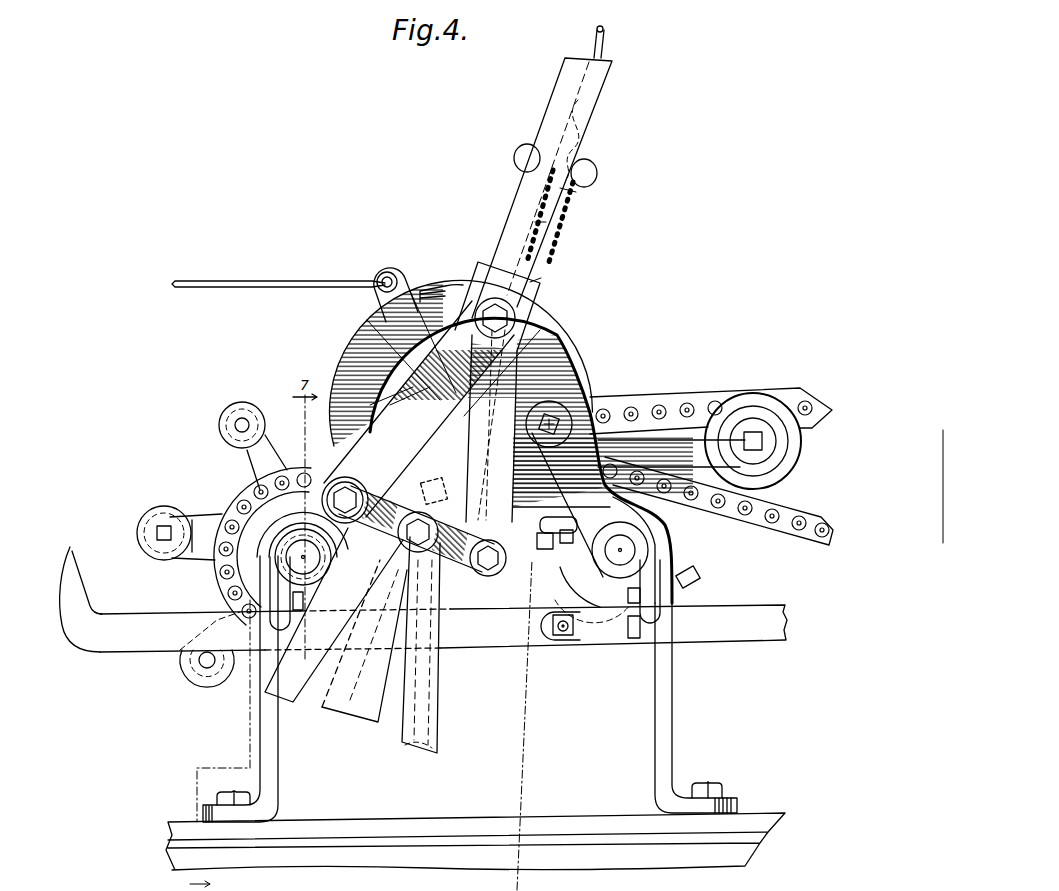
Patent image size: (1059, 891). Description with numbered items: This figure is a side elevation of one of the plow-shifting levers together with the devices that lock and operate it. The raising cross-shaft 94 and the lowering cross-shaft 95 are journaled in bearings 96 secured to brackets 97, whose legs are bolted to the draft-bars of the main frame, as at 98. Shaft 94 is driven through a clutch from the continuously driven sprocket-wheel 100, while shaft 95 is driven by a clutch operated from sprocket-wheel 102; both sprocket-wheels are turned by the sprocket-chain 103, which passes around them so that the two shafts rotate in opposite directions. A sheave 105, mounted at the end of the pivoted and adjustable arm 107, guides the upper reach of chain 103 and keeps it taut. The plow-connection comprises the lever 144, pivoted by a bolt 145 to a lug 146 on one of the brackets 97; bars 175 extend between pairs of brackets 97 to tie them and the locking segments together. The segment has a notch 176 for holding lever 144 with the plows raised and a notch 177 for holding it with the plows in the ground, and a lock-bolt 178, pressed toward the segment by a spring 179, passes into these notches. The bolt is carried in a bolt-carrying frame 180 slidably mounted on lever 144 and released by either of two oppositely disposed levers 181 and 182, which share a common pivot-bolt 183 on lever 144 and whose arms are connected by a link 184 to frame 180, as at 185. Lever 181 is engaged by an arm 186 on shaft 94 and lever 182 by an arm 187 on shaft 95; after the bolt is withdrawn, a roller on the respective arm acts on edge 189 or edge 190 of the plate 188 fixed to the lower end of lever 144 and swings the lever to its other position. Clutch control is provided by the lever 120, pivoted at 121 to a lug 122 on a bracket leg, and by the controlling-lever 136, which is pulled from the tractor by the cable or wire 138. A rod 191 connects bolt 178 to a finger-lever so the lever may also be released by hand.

The rod 191 is at (596, 40).
The lever 144 is at (600, 93).
The controlling-lever 136 is at (390, 276).
The notch 176 is at (421, 288).
The lock-bolt 178 is at (575, 192).
The spring 179 is at (545, 222).
The notch 177 is at (540, 278).
The bolt-carrying frame 180 is at (545, 310).
The connection 185 is at (548, 330).
The bars 175 is at (572, 366).
The bolt 145 is at (585, 381).
The link 184 is at (413, 387).
The lug 146 is at (430, 387).
The pivot-bolt 183 is at (414, 526).
The arm 187 is at (663, 407).
The arm 107 is at (697, 450).
The sheave 105 is at (777, 472).
The sprocket-chain 103 is at (757, 520).
The sprocket-wheel 102 is at (668, 527).
The cross-shaft 95 is at (622, 550).
The bearings 96 is at (665, 590).
The sprocket-wheel 100 is at (267, 525).
The cross-shaft 94 is at (300, 553).
The arm 186 is at (330, 448).
The lever 120 is at (497, 637).
The pivot 121 is at (567, 633).
The lug 122 is at (623, 630).
The lever 181 is at (334, 638).
The plate 188 is at (364, 657).
The edge 189 is at (338, 660).
The edge 190 is at (374, 689).
The lever 182 is at (438, 748).
The brackets 97 is at (270, 715).
The bolts 98 is at (743, 768).
The cable or wire 138 is at (248, 282).